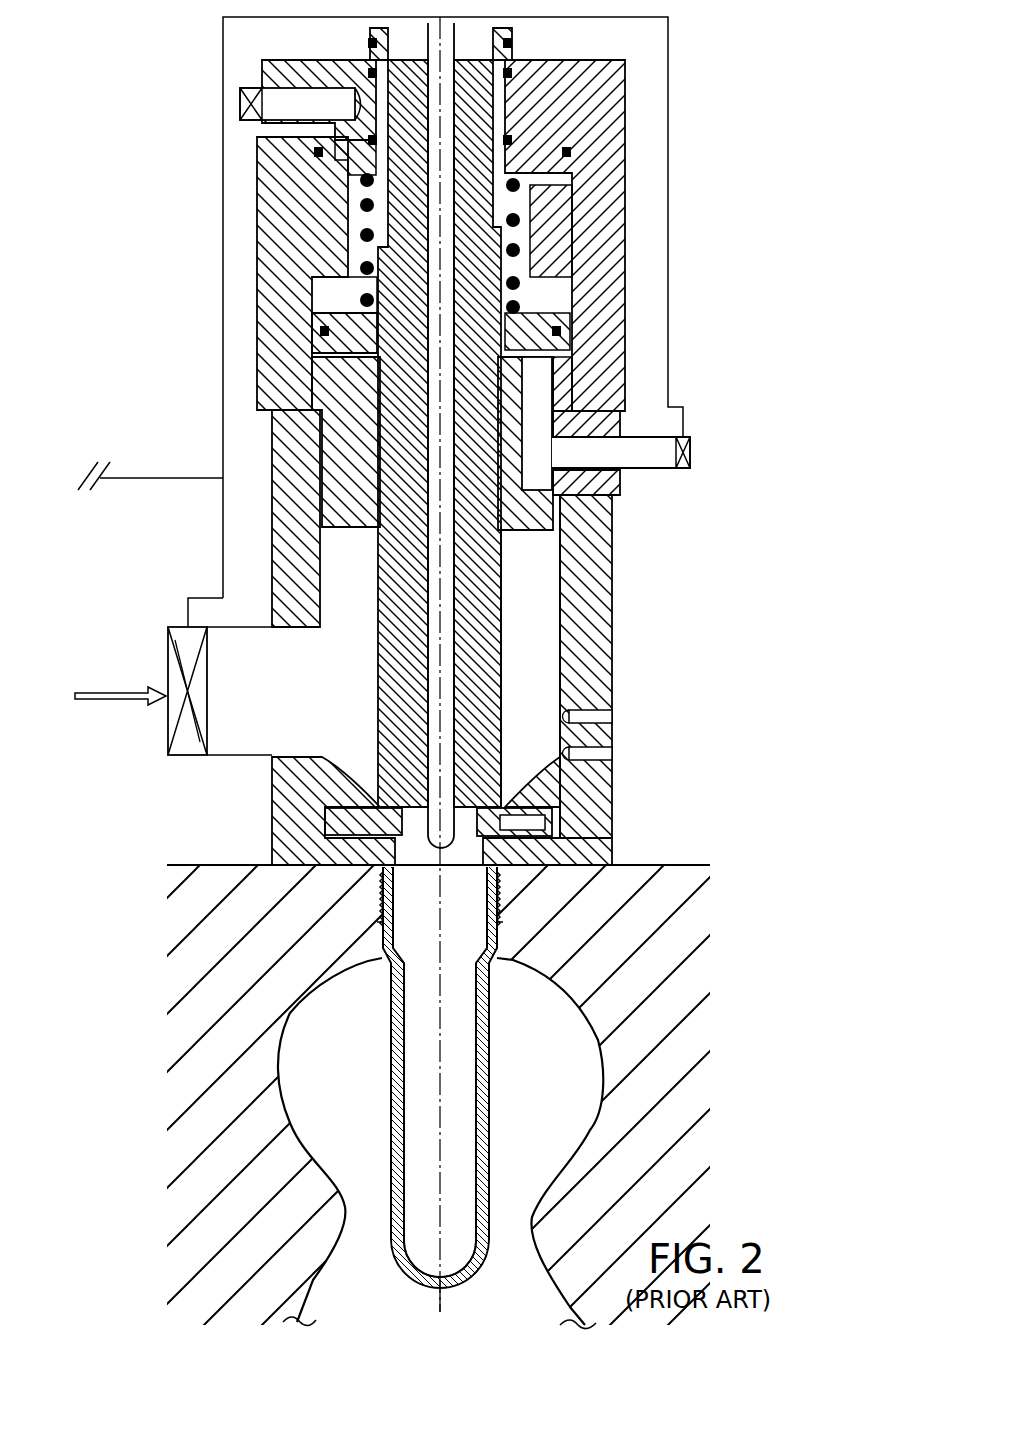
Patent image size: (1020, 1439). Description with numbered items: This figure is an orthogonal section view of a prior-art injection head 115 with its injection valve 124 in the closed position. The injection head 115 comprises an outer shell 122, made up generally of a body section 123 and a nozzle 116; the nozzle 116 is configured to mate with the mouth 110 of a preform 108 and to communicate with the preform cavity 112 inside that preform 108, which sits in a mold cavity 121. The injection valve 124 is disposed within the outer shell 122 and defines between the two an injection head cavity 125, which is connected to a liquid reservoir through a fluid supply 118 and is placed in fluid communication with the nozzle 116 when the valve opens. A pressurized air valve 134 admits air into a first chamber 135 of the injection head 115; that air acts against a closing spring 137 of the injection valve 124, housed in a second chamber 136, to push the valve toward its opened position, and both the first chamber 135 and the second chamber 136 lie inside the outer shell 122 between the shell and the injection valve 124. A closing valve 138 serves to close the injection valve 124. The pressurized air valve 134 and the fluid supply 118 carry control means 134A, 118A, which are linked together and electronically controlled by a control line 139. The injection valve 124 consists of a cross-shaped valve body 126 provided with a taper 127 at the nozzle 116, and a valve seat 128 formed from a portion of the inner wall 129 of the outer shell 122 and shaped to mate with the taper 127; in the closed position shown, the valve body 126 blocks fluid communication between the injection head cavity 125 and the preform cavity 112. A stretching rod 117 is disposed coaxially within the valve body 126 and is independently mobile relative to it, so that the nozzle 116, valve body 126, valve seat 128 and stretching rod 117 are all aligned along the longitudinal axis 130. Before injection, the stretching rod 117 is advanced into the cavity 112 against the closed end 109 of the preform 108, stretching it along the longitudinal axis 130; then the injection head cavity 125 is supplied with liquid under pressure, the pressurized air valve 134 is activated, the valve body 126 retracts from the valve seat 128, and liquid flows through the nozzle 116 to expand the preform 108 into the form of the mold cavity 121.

The preform 108 is at (390, 1153).
The closed end 109 is at (483, 1257).
The mouth 110 is at (380, 868).
The preform cavity 112 is at (458, 1053).
The injection head 115 is at (722, 578).
The nozzle 116 is at (330, 826).
The stretching rod 117 is at (450, 228).
The fluid supply 118 is at (168, 658).
The control means 118A is at (188, 756).
The mold cavity 121 is at (652, 968).
The outer shell 122 is at (262, 190).
The body section 123 is at (185, 265).
The injection valve 124 is at (501, 670).
The injection head cavity 125 is at (532, 580).
The valve body 126 is at (497, 750).
The taper 127 is at (490, 822).
The valve seat 128 is at (490, 828).
The inner wall 129 is at (563, 628).
The longitudinal axis 130 is at (440, 1297).
The pressurized air valve 134 is at (653, 460).
The control means 134A is at (690, 452).
The first chamber 135 is at (540, 368).
The second chamber 136 is at (312, 290).
The closing spring 137 is at (570, 292).
The closing valve 138 is at (258, 102).
The control line 139 is at (222, 395).